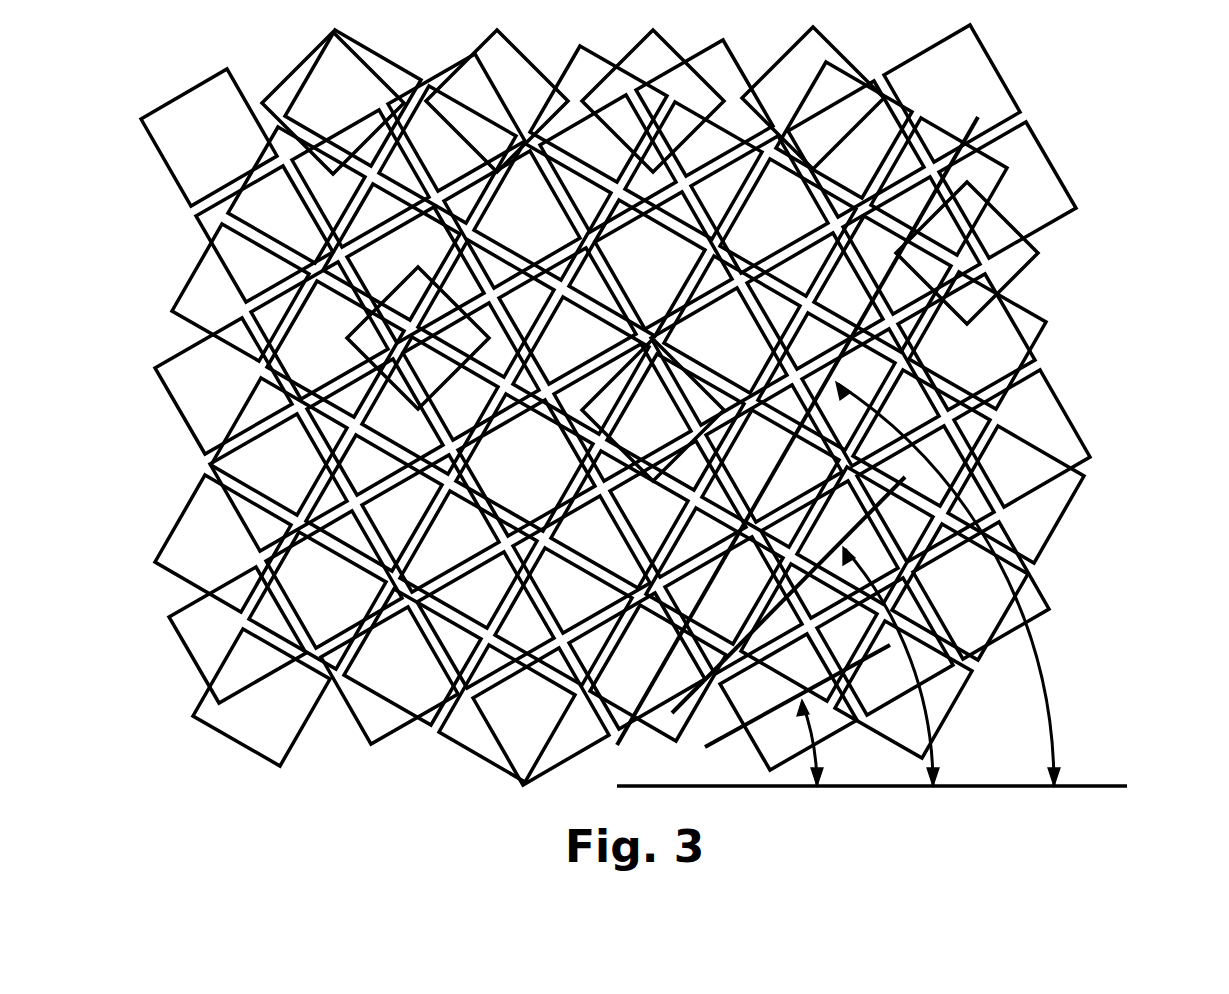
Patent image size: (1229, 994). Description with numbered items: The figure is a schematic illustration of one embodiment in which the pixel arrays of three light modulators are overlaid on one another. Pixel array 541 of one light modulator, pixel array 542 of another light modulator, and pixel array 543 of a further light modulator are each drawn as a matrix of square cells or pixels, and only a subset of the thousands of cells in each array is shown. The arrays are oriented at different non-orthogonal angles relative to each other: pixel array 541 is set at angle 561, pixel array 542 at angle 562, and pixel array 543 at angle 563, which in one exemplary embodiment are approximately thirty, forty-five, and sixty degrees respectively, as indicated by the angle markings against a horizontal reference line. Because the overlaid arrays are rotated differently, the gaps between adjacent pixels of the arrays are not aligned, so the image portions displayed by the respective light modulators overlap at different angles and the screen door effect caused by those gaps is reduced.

The pixel array 541 is at (988, 38).
The pixel array 542 is at (650, 254).
The pixel array 543 is at (619, 406).
The non-orthogonal angle 561 is at (817, 752).
The non-orthogonal angle 562 is at (933, 755).
The non-orthogonal angle 563 is at (1052, 723).